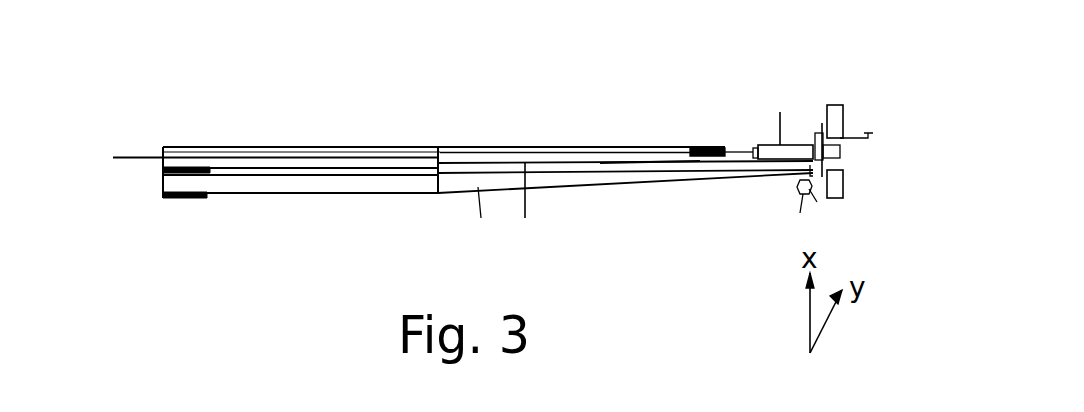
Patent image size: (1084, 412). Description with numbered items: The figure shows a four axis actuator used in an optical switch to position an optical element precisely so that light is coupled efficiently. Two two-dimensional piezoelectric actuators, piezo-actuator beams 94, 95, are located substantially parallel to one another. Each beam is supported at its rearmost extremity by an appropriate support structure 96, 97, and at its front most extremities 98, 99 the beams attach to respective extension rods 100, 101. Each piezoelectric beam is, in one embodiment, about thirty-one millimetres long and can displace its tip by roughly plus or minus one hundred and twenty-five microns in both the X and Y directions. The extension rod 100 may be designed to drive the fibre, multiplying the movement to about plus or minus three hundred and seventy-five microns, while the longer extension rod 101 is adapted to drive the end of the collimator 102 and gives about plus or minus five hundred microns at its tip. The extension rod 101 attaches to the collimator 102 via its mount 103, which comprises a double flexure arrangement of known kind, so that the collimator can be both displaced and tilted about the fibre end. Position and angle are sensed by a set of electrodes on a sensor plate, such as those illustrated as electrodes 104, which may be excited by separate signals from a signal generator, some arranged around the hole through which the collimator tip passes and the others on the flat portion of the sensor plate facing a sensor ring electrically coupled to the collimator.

The piezo-actuator beam 94 is at (237, 183).
The piezo-actuator beam 95 is at (317, 170).
The support structure 96 is at (163, 172).
The support structure 97 is at (165, 197).
The front most extremity 98 is at (392, 152).
The front most extremity 99 is at (427, 180).
The extension rod 100 is at (548, 148).
The extension rod 101 is at (673, 177).
The collimator 102 is at (798, 153).
The mount 103 is at (805, 171).
The electrodes 104 is at (840, 185).